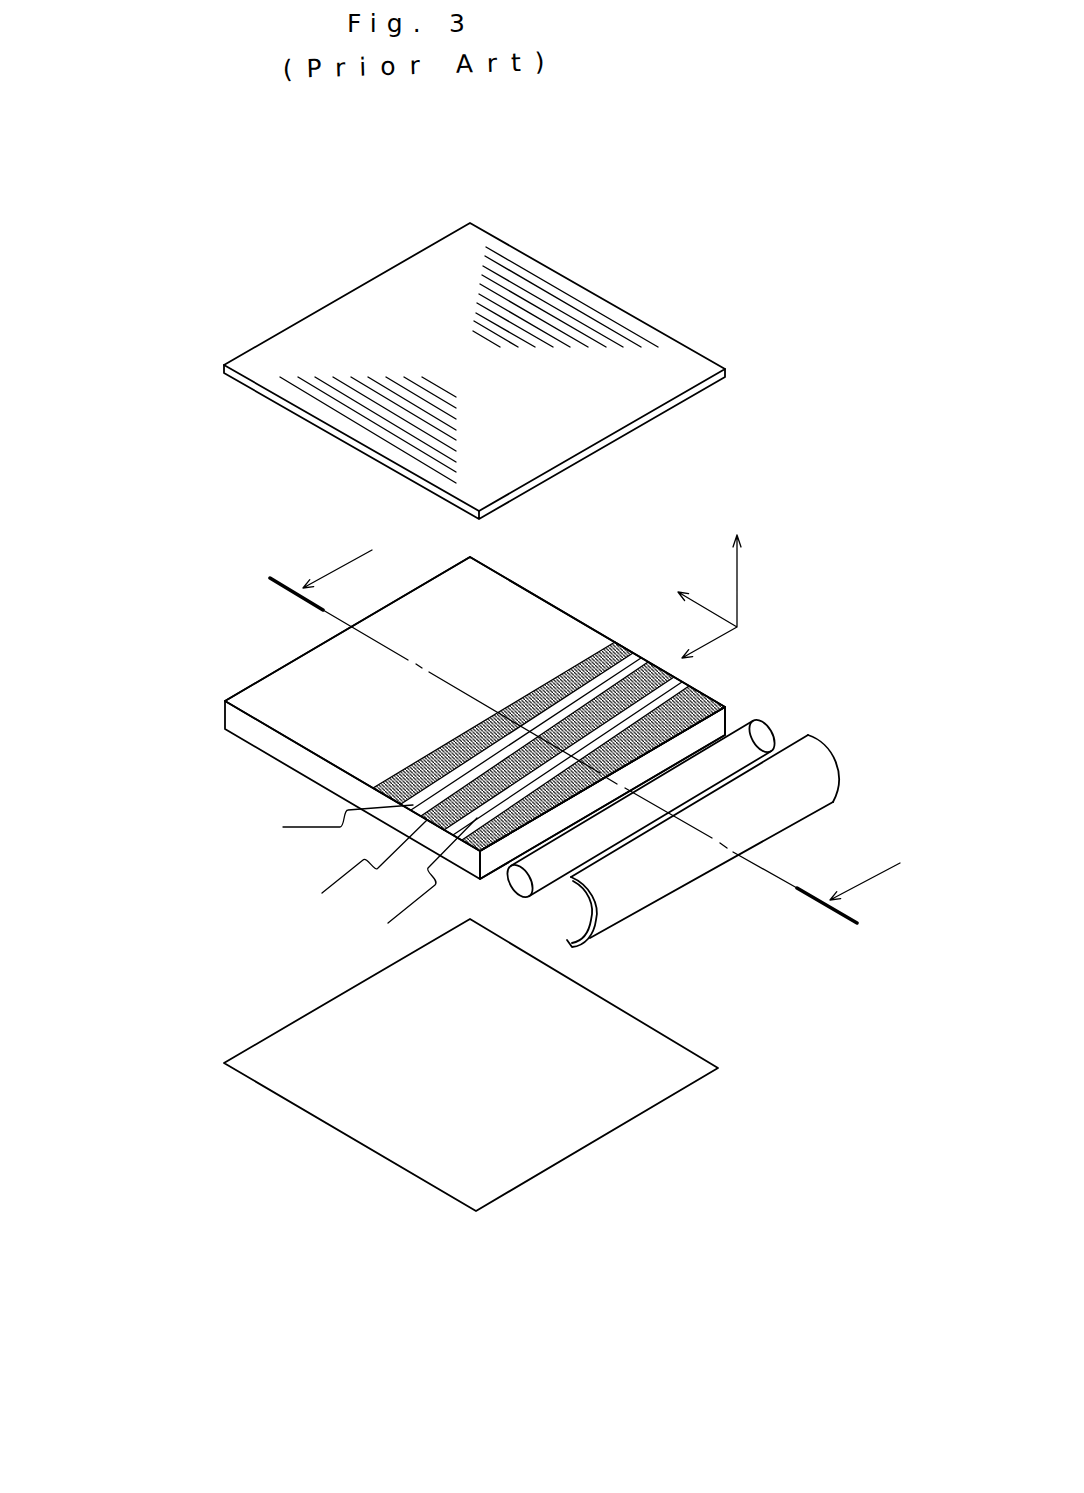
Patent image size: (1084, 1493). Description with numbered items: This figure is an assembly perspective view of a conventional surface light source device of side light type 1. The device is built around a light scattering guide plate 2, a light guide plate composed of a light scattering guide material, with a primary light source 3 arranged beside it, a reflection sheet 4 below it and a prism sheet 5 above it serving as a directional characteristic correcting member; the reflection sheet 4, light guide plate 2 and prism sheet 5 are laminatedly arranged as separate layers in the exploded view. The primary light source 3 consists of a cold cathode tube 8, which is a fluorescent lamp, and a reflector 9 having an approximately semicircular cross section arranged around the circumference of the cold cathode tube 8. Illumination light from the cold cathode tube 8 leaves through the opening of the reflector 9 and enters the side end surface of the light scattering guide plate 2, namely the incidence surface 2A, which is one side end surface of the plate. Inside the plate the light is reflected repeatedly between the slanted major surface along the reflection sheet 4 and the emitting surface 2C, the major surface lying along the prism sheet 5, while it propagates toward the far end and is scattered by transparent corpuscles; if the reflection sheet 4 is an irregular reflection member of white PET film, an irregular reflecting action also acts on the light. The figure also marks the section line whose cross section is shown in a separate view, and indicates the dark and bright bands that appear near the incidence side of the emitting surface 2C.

The surface light source device of side light type 1 is at (276, 1238).
The light scattering guide plate 2 is at (265, 702).
The incidence surface 2A is at (500, 857).
The emitting surface 2C is at (312, 675).
The primary light source 3 is at (786, 675).
The reflection sheet 4 is at (543, 1154).
The prism sheet 5 is at (623, 427).
The cold cathode tube 8 is at (755, 742).
The reflector 9 is at (678, 870).